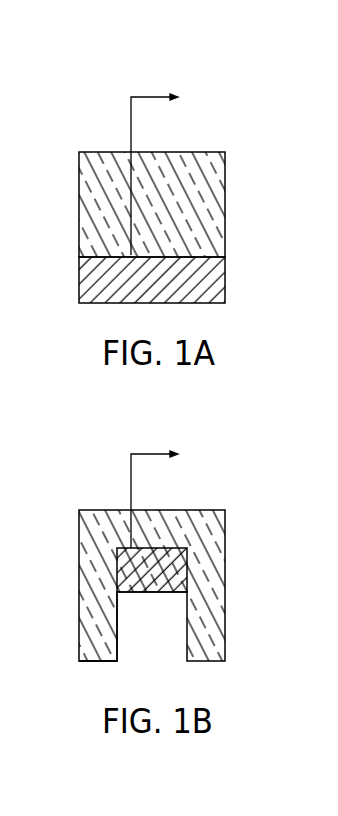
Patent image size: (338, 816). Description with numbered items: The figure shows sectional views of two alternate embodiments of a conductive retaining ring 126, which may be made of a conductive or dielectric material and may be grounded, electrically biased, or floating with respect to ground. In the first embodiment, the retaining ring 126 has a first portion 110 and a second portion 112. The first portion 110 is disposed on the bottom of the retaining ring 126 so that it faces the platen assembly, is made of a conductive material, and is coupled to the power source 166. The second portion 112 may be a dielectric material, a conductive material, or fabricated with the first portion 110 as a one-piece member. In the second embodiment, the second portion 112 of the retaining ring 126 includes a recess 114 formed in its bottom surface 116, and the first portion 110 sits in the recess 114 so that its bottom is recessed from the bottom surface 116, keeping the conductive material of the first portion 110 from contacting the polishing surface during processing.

In FIG. 1A, the first portion 110 is at (225, 277).
In FIG. 1B, the first portion 110 is at (150, 578).
In FIG. 1A, the second portion 112 is at (225, 182).
In FIG. 1B, the second portion 112 is at (225, 540).
In FIG. 1B, the recess 114 is at (117, 593).
In FIG. 1B, the bottom surface 116 is at (97, 661).
In FIG. 1A, the retaining ring 126 is at (160, 216).
In FIG. 1B, the retaining ring 126 is at (155, 600).
In FIG. 1A, the power source 166 is at (210, 171).
In FIG. 1B, the power source 166 is at (210, 496).